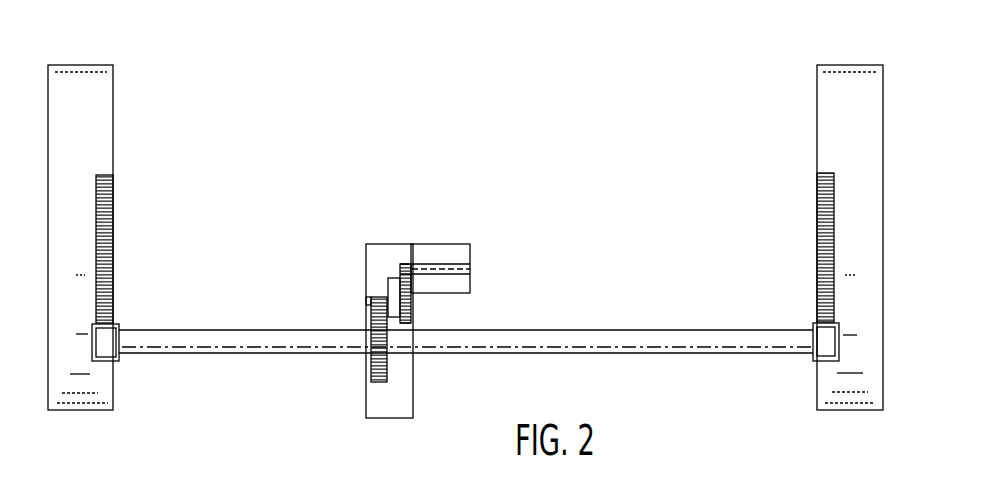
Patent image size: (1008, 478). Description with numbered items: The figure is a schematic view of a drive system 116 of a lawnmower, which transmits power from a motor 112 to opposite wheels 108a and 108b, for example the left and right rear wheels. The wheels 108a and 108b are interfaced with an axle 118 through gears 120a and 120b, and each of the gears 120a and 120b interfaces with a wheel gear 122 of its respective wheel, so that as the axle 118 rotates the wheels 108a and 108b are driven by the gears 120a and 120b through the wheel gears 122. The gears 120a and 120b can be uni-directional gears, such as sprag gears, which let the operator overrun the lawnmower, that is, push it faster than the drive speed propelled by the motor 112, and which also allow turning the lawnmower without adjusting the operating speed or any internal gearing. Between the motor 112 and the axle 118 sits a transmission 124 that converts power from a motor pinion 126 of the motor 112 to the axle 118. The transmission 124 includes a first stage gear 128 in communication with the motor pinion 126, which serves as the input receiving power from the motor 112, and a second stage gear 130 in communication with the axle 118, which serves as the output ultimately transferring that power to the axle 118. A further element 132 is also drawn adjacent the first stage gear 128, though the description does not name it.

The wheel 108a is at (83, 80).
The wheel 108b is at (848, 78).
The motor 112 is at (475, 255).
The drive system 116 is at (558, 90).
The axle 118 is at (633, 337).
The gear 120a is at (102, 362).
The gear 120b is at (812, 355).
The wheel gear 122 is at (113, 227).
The transmission 124 is at (365, 390).
The motor pinion 126 is at (405, 263).
The first stage gear 128 is at (411, 322).
The second stage gear 130 is at (380, 383).
The nut 132 is at (392, 275).